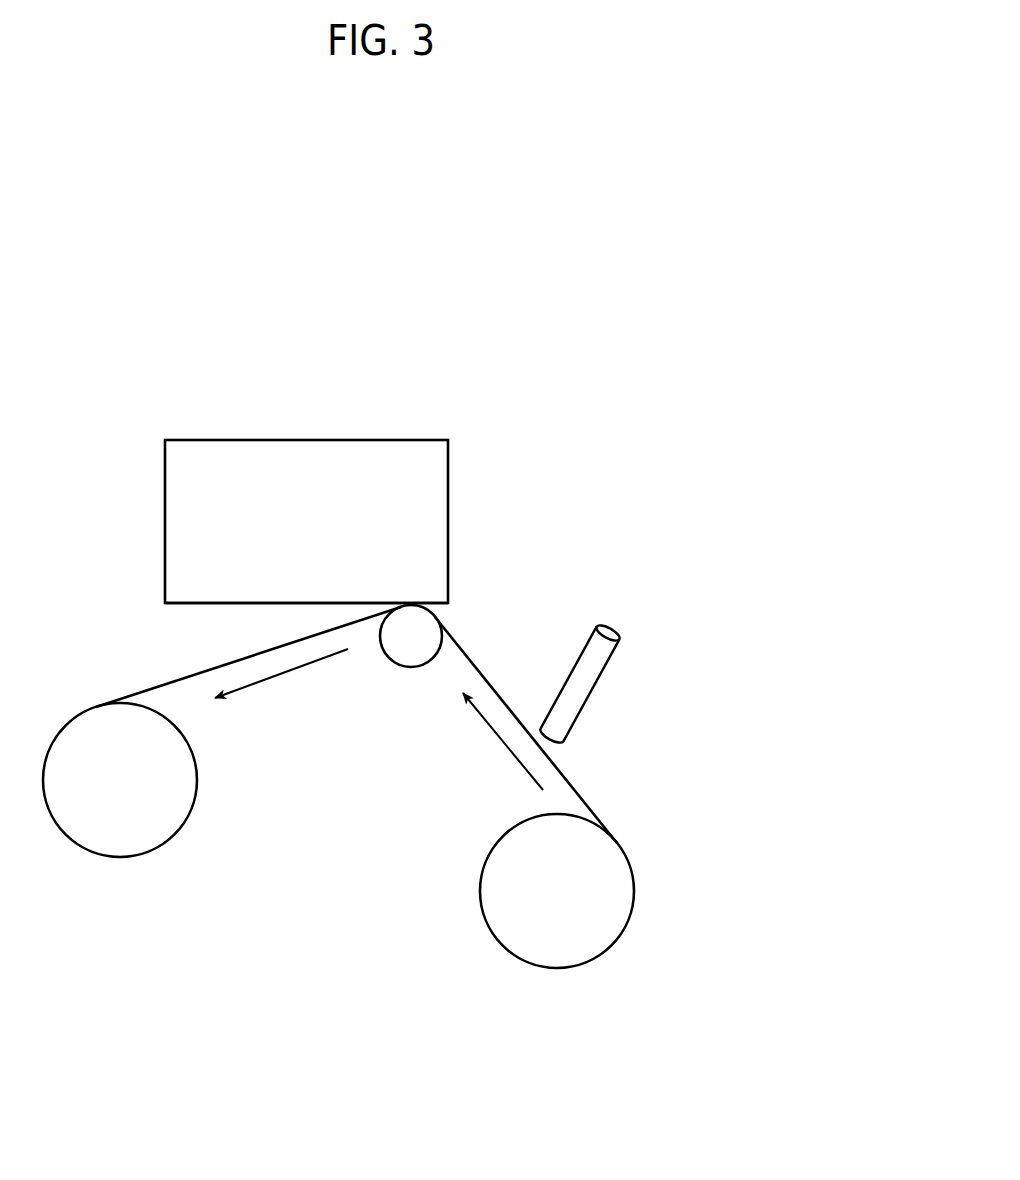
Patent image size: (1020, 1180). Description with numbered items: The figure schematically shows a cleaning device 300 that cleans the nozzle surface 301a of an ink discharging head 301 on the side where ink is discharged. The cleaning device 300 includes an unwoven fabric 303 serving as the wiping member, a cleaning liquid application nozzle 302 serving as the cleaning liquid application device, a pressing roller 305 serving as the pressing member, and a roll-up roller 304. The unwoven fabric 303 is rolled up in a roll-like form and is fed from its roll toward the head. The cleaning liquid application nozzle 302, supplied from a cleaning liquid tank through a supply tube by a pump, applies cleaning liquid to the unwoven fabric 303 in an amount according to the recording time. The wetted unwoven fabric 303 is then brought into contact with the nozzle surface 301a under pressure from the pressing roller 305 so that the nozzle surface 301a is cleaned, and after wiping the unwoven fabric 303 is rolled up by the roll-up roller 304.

The cleaning device 300 is at (667, 291).
The ink discharging head 301 is at (428, 447).
The nozzle surface 301a is at (187, 605).
The cleaning liquid application nozzle 302 is at (607, 627).
The unwoven fabric 303 is at (587, 802).
The roll-up roller 304 is at (120, 857).
The pressing roller 305 is at (425, 621).